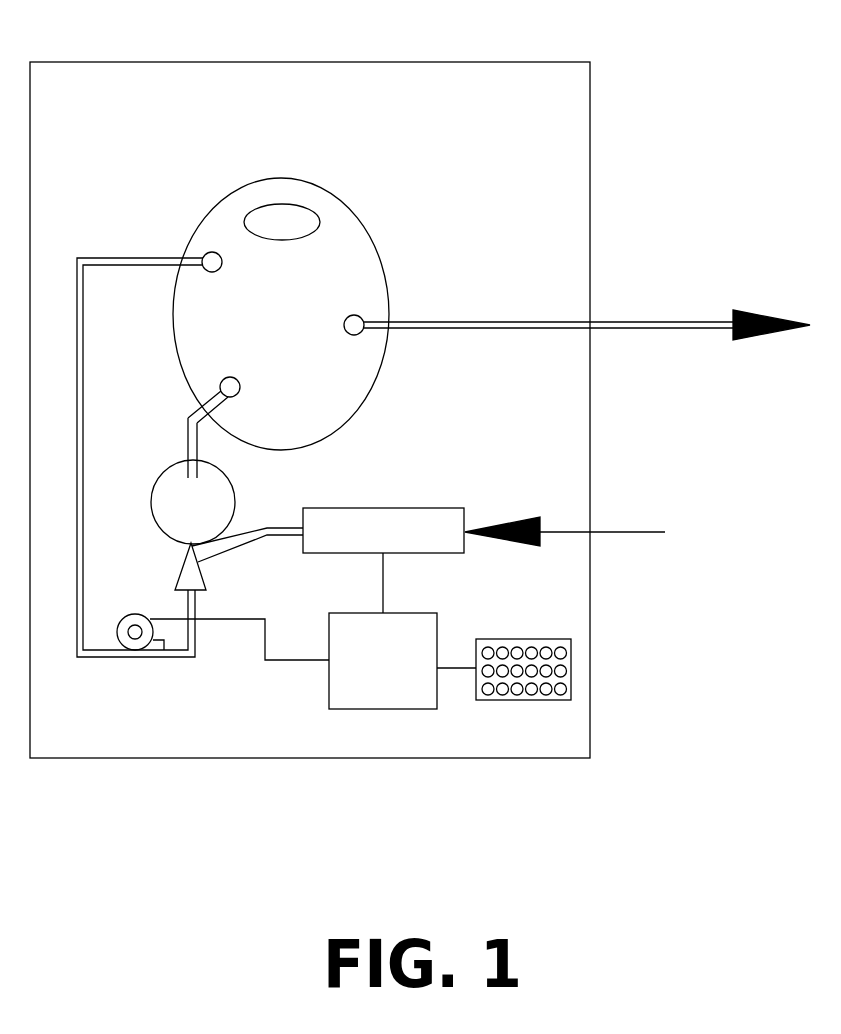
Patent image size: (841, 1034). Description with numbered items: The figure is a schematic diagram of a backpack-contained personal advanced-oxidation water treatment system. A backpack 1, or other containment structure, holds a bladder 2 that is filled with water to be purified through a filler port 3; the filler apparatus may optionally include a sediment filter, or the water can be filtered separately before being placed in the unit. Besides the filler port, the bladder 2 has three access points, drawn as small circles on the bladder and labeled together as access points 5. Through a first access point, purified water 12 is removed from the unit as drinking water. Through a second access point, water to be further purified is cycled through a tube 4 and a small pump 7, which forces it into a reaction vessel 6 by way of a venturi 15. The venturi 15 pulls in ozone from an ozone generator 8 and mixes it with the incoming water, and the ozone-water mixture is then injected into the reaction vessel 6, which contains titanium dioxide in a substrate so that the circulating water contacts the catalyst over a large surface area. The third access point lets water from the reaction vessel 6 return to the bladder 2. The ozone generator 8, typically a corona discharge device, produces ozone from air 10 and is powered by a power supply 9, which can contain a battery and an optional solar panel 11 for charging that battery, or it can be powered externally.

The backpack 1 is at (556, 138).
The bladder 2 is at (355, 258).
The filler port 3 is at (270, 222).
The tube 4 is at (138, 262).
The bladder ports 5 is at (222, 266).
The reaction vessel 6 is at (170, 480).
The small pump 7 is at (133, 650).
The ozone generator 8 is at (365, 555).
The power supply 9 is at (330, 692).
The air 10 is at (692, 575).
The solar panel 11 is at (517, 700).
The purified water 12 is at (711, 306).
The venturi 15 is at (193, 573).